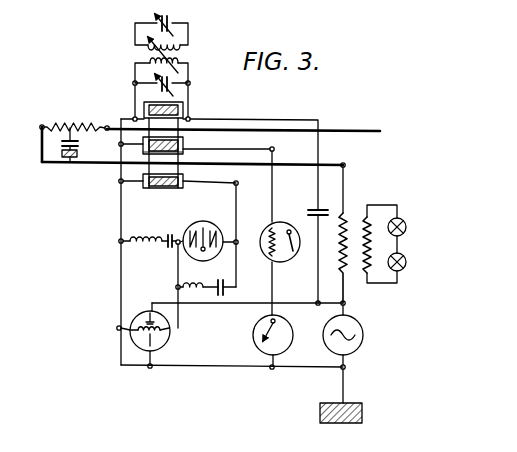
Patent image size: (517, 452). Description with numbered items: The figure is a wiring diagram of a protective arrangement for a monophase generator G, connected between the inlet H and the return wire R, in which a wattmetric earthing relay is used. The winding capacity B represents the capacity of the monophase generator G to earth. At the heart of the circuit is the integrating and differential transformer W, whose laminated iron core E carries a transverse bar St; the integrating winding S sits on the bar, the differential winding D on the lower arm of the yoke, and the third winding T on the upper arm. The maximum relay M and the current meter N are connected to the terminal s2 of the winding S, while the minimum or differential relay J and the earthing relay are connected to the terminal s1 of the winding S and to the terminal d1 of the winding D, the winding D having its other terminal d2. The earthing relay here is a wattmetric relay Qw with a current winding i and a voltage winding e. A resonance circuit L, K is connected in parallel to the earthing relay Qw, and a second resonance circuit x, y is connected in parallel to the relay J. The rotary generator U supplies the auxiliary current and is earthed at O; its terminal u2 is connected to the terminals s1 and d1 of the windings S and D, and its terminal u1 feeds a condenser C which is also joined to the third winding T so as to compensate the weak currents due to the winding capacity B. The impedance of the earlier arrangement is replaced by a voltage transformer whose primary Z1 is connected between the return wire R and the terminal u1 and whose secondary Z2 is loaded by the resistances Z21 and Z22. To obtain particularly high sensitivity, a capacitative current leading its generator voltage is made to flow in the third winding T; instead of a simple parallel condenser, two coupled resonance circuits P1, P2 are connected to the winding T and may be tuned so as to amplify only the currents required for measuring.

The coupled resonance circuit P1 is at (135, 24).
The coupled resonance circuit P2 is at (135, 64).
The monophase generator G is at (74, 115).
The inlet H is at (243, 119).
The winding capacity B is at (62, 156).
The third winding T is at (183, 109).
The integrating and differential transformer W is at (254, 155).
The integrating winding S is at (183, 143).
The transverse bar St is at (183, 152).
The laminated iron core E is at (157, 187).
The differential winding D is at (191, 184).
The terminal of winding S s1 is at (119, 144).
The terminal of winding S s2 is at (274, 149).
The terminal of winding D d1 is at (119, 181).
The terminal of winding D d2 is at (238, 183).
The return wire R is at (337, 162).
The condenser C is at (312, 211).
The maximum relay M is at (286, 252).
The resonance circuit coil L is at (143, 227).
The resonance circuit condenser K is at (167, 247).
The minimum or differential relay J is at (216, 222).
The resonance circuit coil x is at (189, 284).
The resonance circuit condenser y is at (220, 281).
The voltage winding e is at (149, 314).
The current winding i is at (143, 336).
The wattmetric earthing relay Qw is at (168, 341).
The terminal of auxiliary generator u1 is at (345, 303).
The terminal of auxiliary generator u2 is at (345, 368).
The current meter N is at (291, 340).
The rotary generator for auxiliary current U is at (362, 338).
The earth O is at (362, 407).
The primary of voltage transformer Z1 is at (334, 258).
The secondary of voltage transformer Z2 is at (380, 244).
The loading resistance Z21 is at (406, 227).
The loading resistance Z22 is at (406, 262).